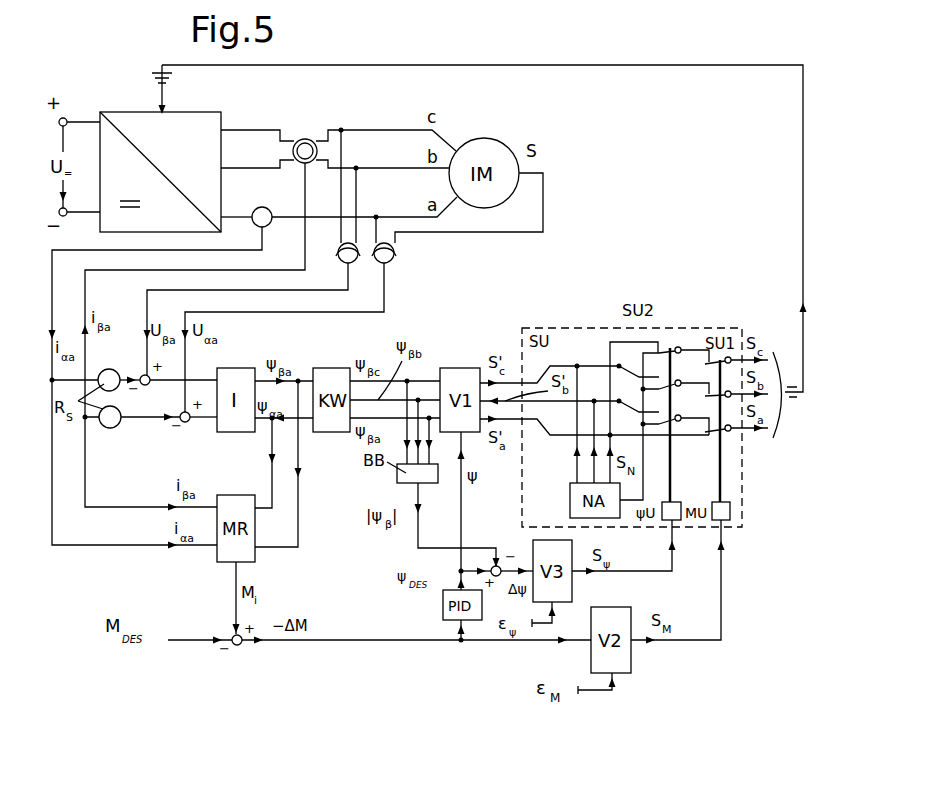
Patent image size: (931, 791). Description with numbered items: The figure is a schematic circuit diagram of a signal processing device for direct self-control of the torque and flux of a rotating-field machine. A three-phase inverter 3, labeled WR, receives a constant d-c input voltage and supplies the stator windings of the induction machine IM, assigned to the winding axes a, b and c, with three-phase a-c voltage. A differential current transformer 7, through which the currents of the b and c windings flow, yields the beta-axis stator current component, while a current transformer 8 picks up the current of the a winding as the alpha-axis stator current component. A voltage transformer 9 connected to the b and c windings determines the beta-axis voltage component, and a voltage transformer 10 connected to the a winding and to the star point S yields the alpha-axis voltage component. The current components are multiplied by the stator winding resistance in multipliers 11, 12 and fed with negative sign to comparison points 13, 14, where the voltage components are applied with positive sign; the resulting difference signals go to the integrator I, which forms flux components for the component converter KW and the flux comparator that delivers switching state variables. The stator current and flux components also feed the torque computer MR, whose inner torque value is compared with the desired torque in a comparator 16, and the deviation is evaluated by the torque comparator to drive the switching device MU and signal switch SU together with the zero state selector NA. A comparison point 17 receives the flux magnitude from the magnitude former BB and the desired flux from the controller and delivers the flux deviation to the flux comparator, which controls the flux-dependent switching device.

The three-phase inverter 3 is at (160, 172).
The current transformer 7 is at (305, 135).
The current transformer 8 is at (262, 201).
The voltage transformer 9 is at (339, 256).
The voltage transformer 10 is at (396, 256).
The multiplier 11 is at (109, 368).
The multiplier 12 is at (110, 431).
The comparison point 13 is at (143, 394).
The comparison point 14 is at (185, 434).
The comparator 16 is at (238, 655).
The comparison point 17 is at (484, 549).